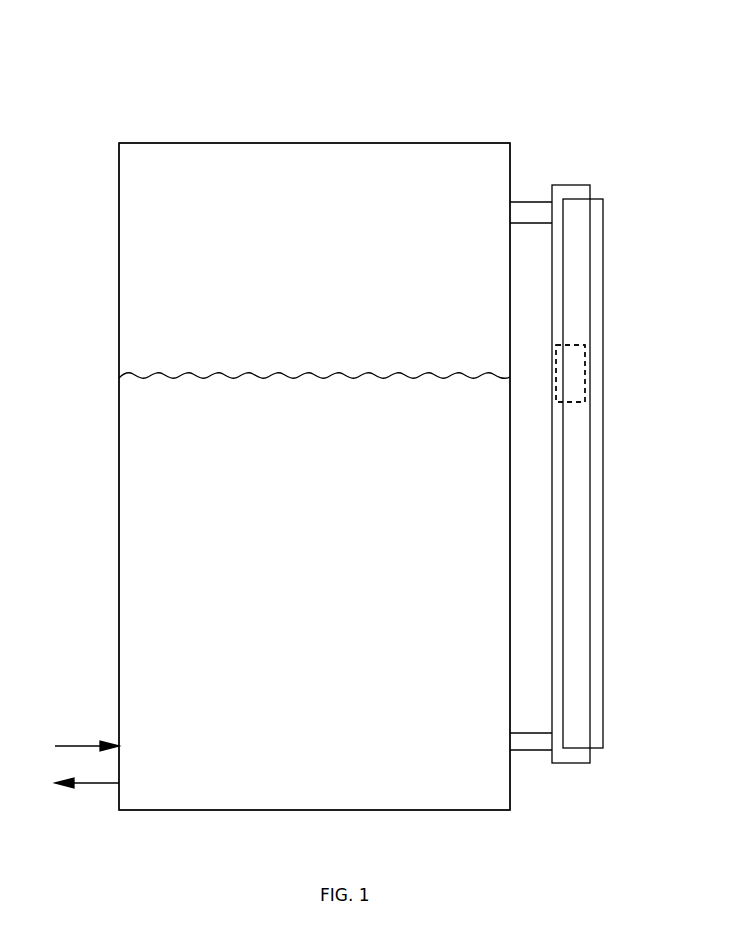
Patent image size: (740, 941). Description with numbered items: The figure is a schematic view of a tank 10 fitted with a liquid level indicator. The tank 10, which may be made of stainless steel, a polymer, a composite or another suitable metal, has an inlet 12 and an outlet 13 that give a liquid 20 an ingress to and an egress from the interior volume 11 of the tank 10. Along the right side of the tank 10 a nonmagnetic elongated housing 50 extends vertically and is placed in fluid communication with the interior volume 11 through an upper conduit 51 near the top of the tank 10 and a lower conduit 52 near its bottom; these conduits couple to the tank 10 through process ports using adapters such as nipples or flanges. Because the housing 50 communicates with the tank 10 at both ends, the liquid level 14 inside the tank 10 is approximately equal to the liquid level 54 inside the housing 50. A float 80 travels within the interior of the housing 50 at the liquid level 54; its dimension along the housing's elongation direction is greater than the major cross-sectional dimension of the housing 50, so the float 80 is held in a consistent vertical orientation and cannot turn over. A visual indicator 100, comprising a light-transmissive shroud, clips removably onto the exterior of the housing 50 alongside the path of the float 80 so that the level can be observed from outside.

The tank 10 is at (108, 80).
The interior volume 11 is at (140, 283).
The inlet 12 is at (77, 745).
The outlet 13 is at (88, 783).
The liquid level 14 is at (140, 380).
The liquid 20 is at (132, 595).
The nonmagnetic elongated housing 50 is at (570, 185).
The upper conduit 51 is at (525, 201).
The lower conduit 52 is at (525, 751).
The liquid level 54 is at (562, 375).
The float 80 is at (585, 389).
The visual indicator 100 is at (603, 505).